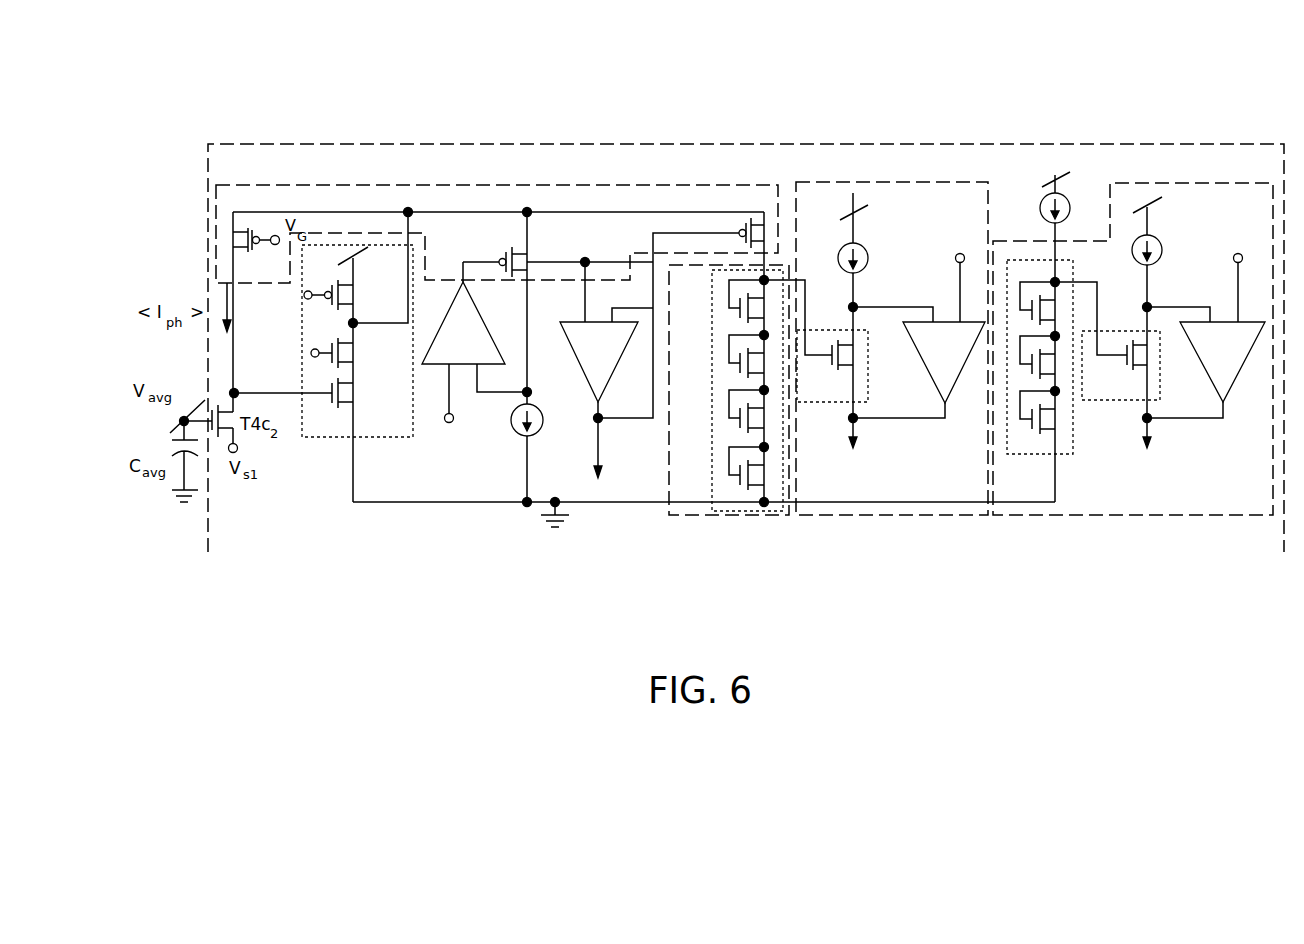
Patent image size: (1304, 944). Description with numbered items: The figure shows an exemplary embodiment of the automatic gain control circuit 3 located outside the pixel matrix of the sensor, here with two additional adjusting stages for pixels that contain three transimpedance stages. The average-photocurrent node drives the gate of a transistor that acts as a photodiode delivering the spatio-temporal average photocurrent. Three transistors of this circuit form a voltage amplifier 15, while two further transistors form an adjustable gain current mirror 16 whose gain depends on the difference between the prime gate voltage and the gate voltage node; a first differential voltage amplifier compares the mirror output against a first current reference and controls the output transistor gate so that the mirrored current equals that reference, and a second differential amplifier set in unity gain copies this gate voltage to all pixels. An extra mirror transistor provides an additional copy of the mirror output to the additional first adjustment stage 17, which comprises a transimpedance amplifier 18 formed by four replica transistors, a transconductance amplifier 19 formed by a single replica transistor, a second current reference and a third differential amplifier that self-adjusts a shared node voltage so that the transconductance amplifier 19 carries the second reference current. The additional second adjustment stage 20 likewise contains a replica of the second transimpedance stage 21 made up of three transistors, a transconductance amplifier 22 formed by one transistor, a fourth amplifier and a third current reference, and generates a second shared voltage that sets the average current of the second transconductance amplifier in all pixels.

The automatic gain control circuit 3 is at (285, 68).
The voltage amplifier 15 is at (413, 437).
The adjustable gain current mirror 16 is at (473, 186).
The additional first adjustment stage 17 is at (869, 182).
The transimpedance amplifier 18 is at (789, 460).
The transconductance amplifier 19 is at (868, 400).
The additional second adjustment stage 20 is at (1147, 183).
The second transimpedance stage 21 is at (1073, 455).
The transconductance amplifier 22 is at (1160, 402).